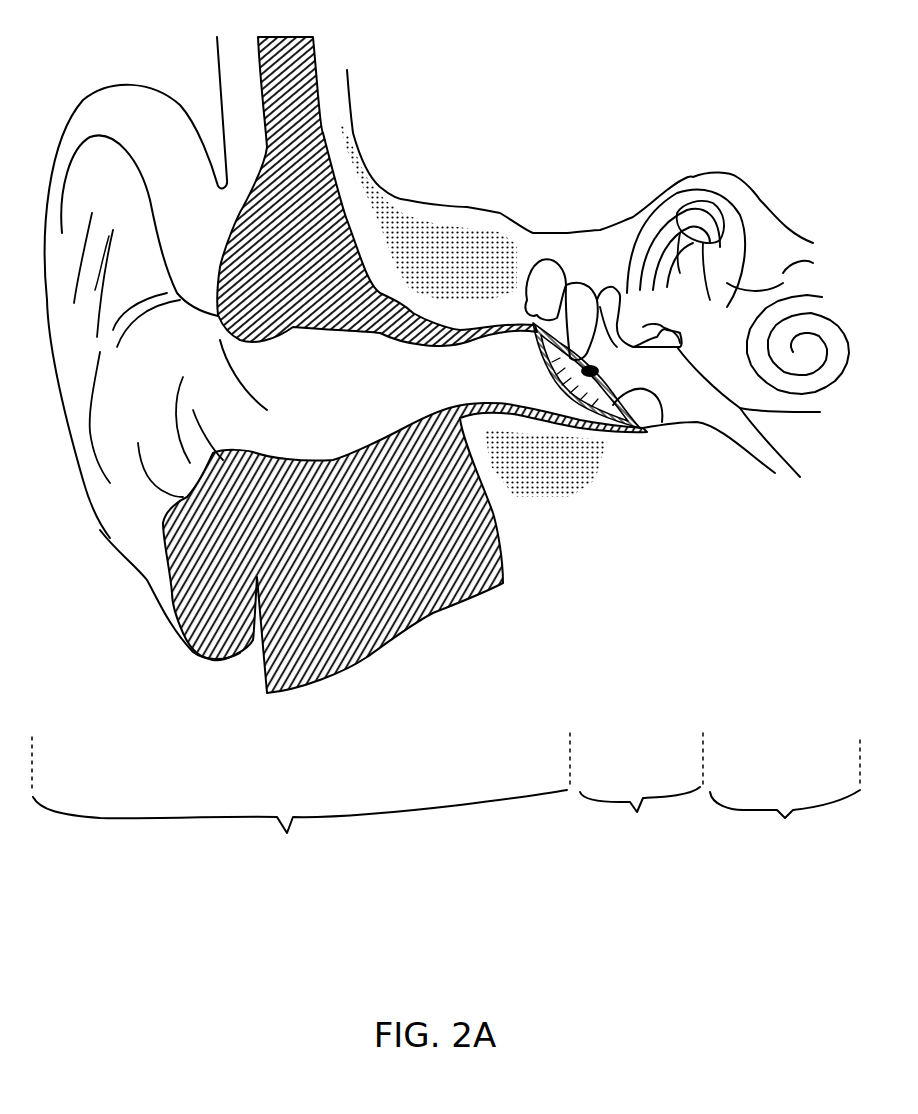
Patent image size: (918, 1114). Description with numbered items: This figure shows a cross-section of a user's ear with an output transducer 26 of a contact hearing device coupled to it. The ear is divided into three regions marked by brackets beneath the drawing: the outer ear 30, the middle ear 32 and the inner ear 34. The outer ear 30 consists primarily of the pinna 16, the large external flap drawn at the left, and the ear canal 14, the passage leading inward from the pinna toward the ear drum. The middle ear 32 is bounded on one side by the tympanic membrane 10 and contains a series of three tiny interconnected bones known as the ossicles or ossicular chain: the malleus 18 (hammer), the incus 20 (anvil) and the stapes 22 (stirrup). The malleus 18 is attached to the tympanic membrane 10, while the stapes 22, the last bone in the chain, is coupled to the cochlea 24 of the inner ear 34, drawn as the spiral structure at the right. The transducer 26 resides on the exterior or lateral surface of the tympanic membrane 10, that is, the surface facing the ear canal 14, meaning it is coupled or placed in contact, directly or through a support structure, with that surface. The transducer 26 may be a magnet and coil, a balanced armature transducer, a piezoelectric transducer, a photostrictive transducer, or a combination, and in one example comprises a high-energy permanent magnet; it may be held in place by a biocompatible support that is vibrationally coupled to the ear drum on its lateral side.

The tympanic membrane 10 is at (660, 422).
The ear canal 14 is at (273, 427).
The pinna 16 is at (128, 113).
The malleus 18 is at (555, 314).
The incus 20 is at (600, 333).
The stapes 22 is at (663, 327).
The cochlea 24 is at (710, 257).
The transducer 26 is at (548, 348).
The outer ear 30 is at (301, 807).
The middle ear 32 is at (641, 796).
The inner ear 34 is at (785, 802).